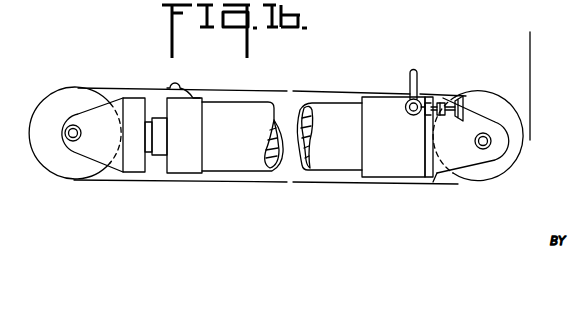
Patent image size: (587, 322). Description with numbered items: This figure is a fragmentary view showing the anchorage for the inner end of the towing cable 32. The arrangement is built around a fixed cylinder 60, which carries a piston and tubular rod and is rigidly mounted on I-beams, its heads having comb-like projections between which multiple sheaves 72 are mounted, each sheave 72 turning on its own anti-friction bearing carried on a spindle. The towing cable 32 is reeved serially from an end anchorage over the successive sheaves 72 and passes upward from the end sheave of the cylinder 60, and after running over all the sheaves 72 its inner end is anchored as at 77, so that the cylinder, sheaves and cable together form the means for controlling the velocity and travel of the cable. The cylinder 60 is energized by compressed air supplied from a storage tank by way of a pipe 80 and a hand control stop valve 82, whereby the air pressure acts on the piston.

The towing cable 32 is at (532, 50).
The fixed cylinder 60 is at (229, 166).
The sheave 72 is at (47, 158).
The anchorage 77 is at (181, 86).
The pipe 80 is at (420, 78).
The hand control stop valve 82 is at (440, 99).